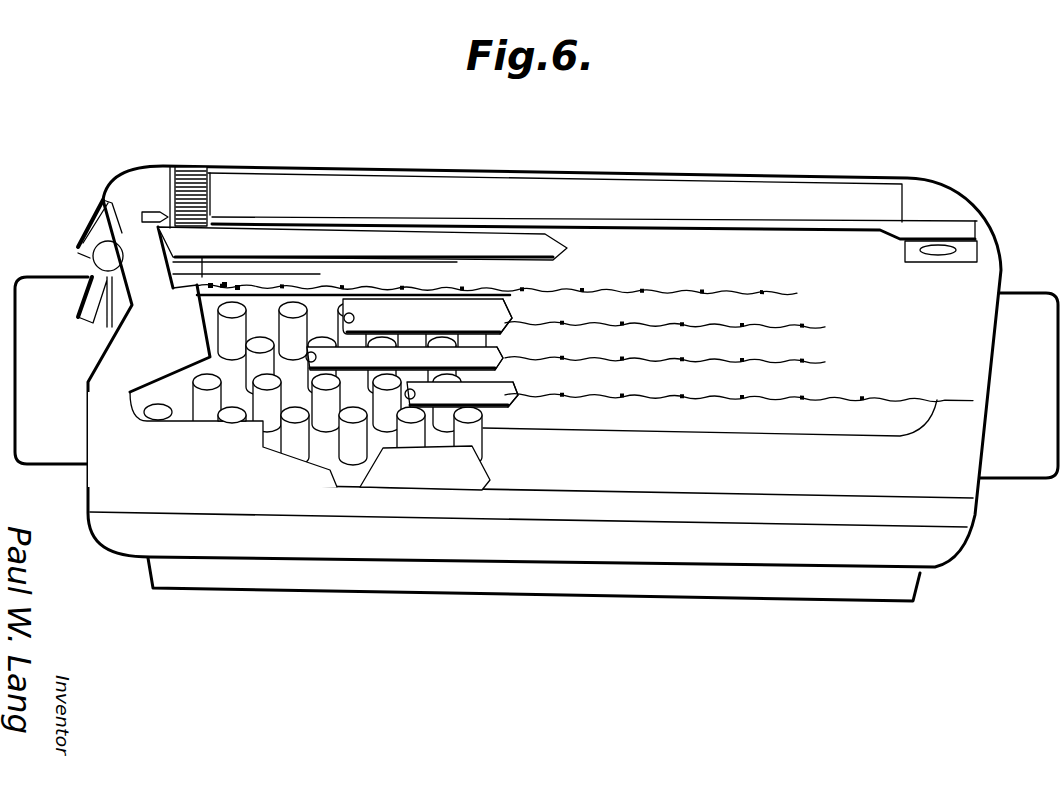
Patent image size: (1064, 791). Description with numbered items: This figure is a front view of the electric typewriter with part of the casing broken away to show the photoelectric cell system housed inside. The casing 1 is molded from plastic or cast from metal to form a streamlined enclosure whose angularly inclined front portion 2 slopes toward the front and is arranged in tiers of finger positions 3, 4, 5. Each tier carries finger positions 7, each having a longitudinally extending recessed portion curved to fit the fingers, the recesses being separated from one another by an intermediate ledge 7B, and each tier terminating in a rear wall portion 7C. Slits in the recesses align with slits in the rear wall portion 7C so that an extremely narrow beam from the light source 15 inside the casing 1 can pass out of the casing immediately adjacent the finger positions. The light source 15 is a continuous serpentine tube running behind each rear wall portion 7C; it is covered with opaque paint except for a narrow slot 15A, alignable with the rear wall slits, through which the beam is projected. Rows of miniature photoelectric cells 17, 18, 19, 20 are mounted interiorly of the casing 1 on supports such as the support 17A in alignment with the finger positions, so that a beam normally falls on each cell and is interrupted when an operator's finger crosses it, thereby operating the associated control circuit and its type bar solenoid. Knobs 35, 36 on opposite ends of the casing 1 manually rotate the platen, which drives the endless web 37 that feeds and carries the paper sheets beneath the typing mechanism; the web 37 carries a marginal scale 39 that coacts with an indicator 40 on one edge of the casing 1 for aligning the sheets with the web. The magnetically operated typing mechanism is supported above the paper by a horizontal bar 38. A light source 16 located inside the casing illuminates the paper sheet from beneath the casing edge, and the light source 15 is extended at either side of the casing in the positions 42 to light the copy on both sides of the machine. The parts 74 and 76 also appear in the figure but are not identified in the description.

The casing 1 is at (936, 198).
The inclined front portion 2 is at (813, 279).
The tier of finger positions 3 is at (810, 289).
The tier of finger positions 4 is at (825, 325).
The tier of finger positions 5 is at (836, 371).
The finger position 7 is at (211, 284).
The intermediate ledge 7B is at (280, 273).
The rear wall portion 7C is at (300, 247).
The light source 15 is at (423, 315).
The narrow slot 15A is at (493, 397).
The light source 16 is at (107, 237).
The row of photoelectric cells 17 is at (228, 310).
The support 17A is at (262, 328).
The row of photoelectric cells 18 is at (218, 343).
The row of photoelectric cells 19 is at (207, 378).
The row of photoelectric cells 20 is at (230, 417).
The knob 35 is at (33, 277).
The knob 36 is at (1038, 285).
The web 37 is at (811, 195).
The horizontal bar 38 is at (875, 228).
The marginal scale 39 is at (190, 166).
The indicator 40 is at (150, 211).
The light source extension 42 is at (83, 217).
The lever 74 is at (237, 287).
The shaft 76 is at (224, 283).